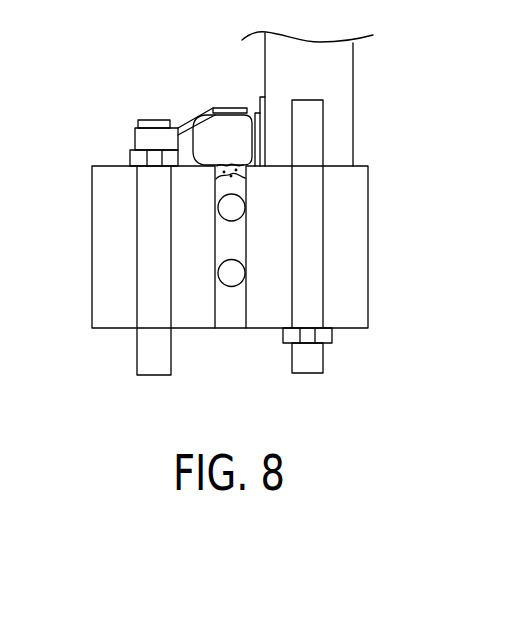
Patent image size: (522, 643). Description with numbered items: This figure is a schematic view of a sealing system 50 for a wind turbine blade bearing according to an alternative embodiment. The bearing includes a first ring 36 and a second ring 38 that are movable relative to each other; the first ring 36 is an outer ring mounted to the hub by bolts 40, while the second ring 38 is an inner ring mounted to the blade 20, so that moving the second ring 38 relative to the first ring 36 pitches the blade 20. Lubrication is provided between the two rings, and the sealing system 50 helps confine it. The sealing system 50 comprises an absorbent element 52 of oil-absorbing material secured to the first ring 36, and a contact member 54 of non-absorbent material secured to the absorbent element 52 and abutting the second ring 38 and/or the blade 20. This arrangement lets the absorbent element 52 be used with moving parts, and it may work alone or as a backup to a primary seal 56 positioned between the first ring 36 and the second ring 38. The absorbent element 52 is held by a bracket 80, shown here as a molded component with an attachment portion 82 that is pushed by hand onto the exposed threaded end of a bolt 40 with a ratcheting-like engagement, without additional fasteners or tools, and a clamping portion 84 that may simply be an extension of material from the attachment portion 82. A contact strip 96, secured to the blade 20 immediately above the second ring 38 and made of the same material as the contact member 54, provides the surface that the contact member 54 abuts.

The blade 20 is at (353, 75).
The first ring 36 is at (92, 170).
The second ring 38 is at (370, 213).
The bolt 40 is at (152, 190).
The sealing system 50 is at (175, 81).
The absorbent element 52 is at (237, 147).
The contact member 54 is at (257, 167).
The primary seal 56 is at (217, 180).
The bracket 80 is at (131, 116).
The attachment portion 82 is at (145, 142).
The clamping portion 84 is at (232, 105).
The contact strip 96 is at (265, 97).